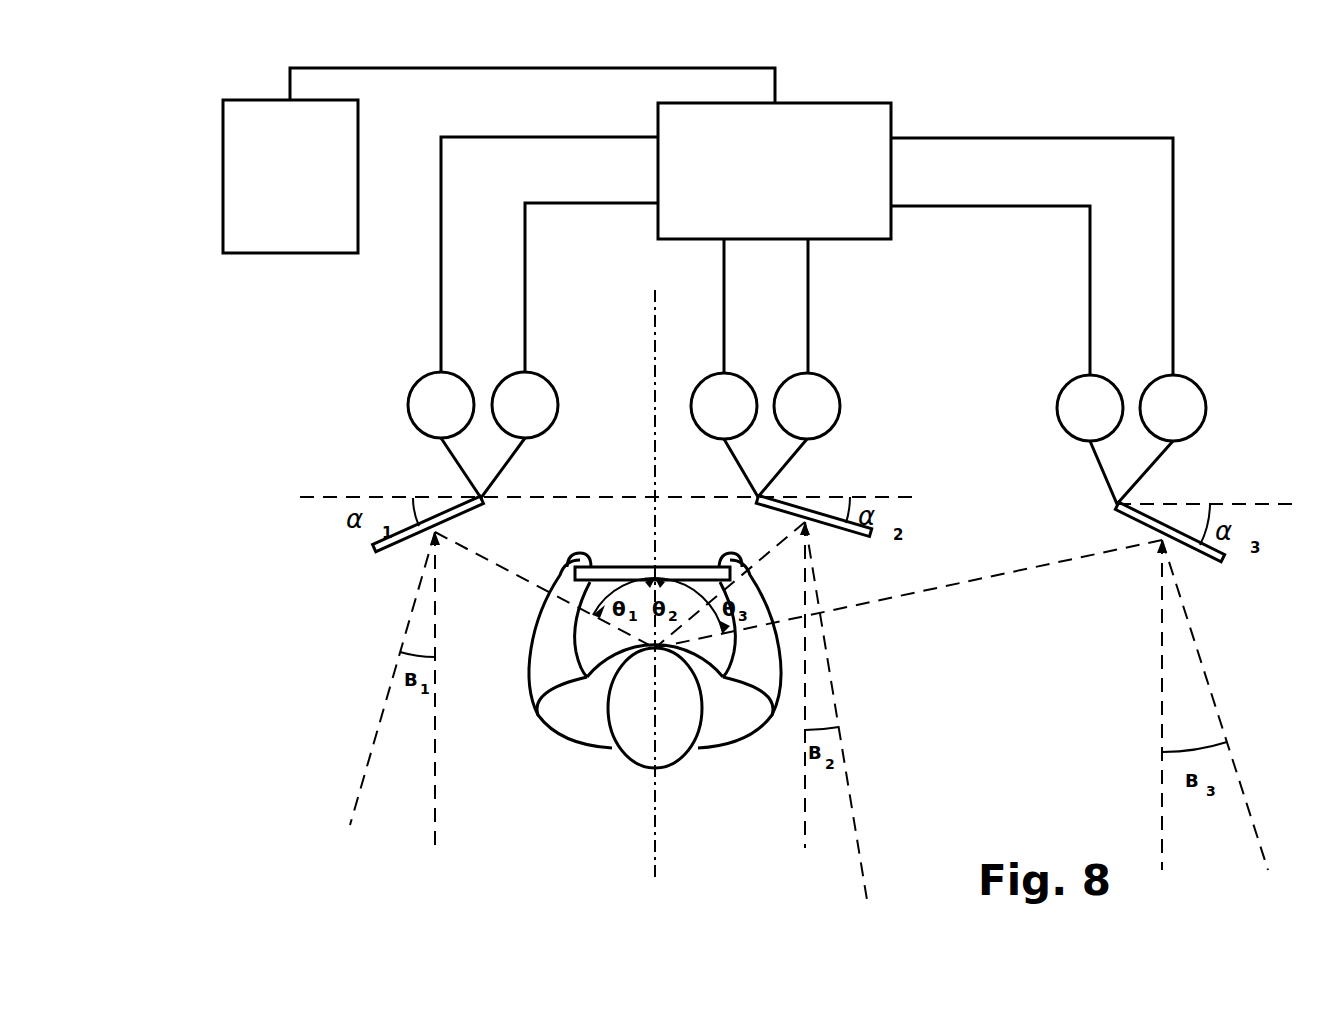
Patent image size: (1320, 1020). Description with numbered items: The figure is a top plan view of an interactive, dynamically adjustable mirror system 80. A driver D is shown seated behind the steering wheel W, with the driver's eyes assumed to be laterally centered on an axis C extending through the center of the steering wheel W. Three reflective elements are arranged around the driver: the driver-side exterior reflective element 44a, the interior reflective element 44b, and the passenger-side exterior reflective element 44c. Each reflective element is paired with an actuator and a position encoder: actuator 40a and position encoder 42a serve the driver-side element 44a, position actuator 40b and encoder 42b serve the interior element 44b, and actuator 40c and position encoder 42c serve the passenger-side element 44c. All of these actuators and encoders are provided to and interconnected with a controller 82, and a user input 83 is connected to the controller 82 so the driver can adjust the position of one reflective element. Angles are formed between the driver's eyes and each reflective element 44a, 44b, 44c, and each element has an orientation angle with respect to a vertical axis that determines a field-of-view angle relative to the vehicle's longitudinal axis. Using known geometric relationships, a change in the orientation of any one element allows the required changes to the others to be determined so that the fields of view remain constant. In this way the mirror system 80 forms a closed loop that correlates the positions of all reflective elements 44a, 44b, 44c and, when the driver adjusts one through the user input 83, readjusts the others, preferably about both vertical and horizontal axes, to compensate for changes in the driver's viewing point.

The interactive mirror system 80 is at (984, 719).
The controller 82 is at (820, 103).
The user input 83 is at (309, 254).
The actuator 40a is at (408, 415).
The position actuator 40b is at (692, 396).
The actuator 40c is at (1057, 410).
The position encoder 42a is at (582, 388).
The encoder 42b is at (842, 416).
The position encoder 42c is at (1207, 405).
The driver-side exterior reflective element 44a is at (463, 518).
The interior reflective element 44b is at (847, 535).
The passenger-side exterior reflective element 44c is at (1200, 553).
The axis C is at (656, 540).
The steering wheel W is at (645, 567).
The driver D is at (700, 745).